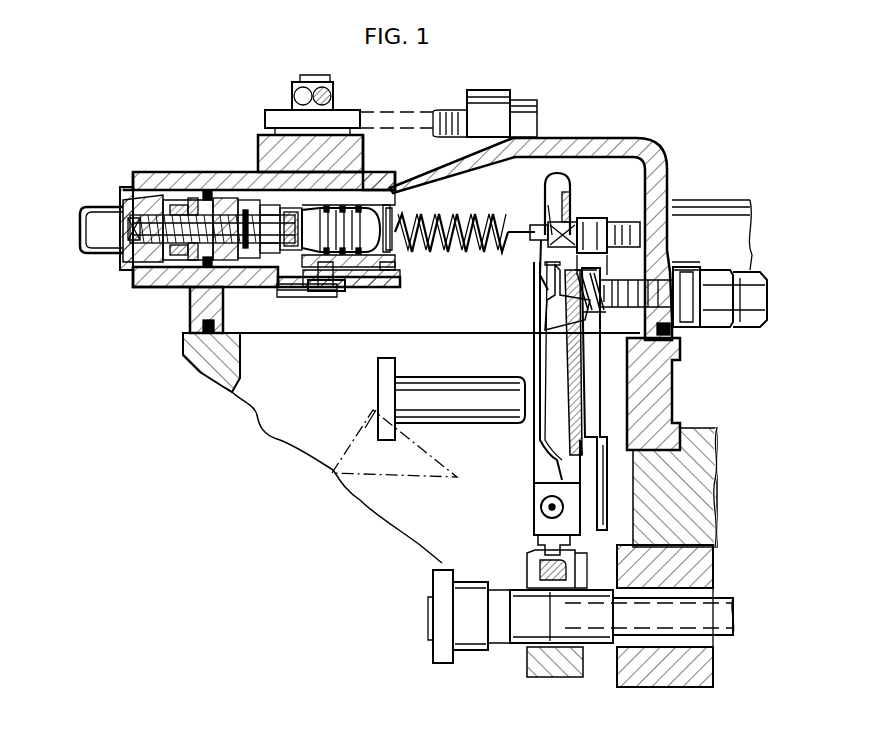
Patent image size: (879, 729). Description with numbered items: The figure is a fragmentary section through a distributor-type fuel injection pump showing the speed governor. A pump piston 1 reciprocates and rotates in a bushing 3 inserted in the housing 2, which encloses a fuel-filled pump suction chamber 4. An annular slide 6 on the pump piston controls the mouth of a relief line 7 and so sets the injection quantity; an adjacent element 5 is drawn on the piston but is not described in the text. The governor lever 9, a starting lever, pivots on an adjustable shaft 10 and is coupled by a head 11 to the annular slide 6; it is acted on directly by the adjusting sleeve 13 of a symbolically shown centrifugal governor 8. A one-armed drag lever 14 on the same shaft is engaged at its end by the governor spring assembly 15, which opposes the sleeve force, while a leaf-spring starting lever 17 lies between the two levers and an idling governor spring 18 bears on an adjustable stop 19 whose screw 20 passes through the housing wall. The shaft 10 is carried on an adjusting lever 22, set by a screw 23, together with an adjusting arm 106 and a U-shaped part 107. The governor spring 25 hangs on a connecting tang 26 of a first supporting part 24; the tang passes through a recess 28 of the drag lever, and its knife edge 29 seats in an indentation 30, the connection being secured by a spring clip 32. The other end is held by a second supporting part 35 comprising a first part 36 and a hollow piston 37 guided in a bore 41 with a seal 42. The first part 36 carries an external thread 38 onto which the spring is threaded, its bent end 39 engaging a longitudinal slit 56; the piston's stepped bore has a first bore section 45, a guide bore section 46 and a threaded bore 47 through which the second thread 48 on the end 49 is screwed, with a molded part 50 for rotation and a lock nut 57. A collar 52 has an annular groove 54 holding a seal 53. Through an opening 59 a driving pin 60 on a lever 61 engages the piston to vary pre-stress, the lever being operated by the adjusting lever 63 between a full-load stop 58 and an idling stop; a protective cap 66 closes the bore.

The pump piston 1 is at (475, 590).
The housing 2 is at (597, 152).
The bushing 3 is at (695, 568).
The pump suction chamber 4 is at (404, 461).
The shaft 5 is at (555, 595).
The annular slide 6 is at (540, 660).
The relief line 7 is at (540, 622).
The centrifugal governor 8 is at (390, 482).
The governor lever 9 is at (540, 448).
The shaft 10 is at (541, 505).
The head 11 is at (532, 555).
The adjusting sleeve 13 is at (451, 399).
The drag lever 14 is at (578, 380).
The governor spring assembly 15 is at (470, 285).
The starting lever 17 is at (552, 430).
The idling governor spring 18 is at (580, 315).
The adjustable stop 19 is at (655, 340).
The screw 20 is at (682, 322).
The adjusting lever 22 is at (584, 418).
The screw 23 is at (610, 250).
The first supporting part 24 is at (588, 220).
The governor spring 25 is at (475, 258).
The connecting tang 26 is at (535, 240).
The recess 28 is at (566, 220).
The knife edge 29 is at (545, 192).
The indentation 30 is at (545, 215).
The spring clip 32 is at (556, 172).
The second supporting part 35 is at (278, 290).
The first part 36 is at (387, 200).
The hollow piston 37 is at (228, 172).
The external thread 38 is at (384, 200).
The bent end 39 is at (320, 200).
The bore 41 is at (165, 200).
The seal 42 is at (213, 198).
The first bore section 45 is at (395, 262).
The guide bore section 46 is at (248, 200).
The threaded bore 47 is at (199, 200).
The second thread 48 is at (128, 270).
The end 49 is at (150, 198).
The molded part 50 is at (133, 178).
The collar 52 is at (296, 200).
The seal 53 is at (268, 200).
The annular groove 54 is at (265, 287).
The longitudinal slit 56 is at (353, 205).
The lock nut 57 is at (183, 200).
The full-load stop 58 is at (452, 110).
The opening 59 is at (360, 278).
The driving pin 60 is at (335, 277).
The lever 61 is at (296, 292).
The adjusting lever 63 is at (345, 118).
The protective cap 66 is at (105, 213).
The adjusting arm 106 is at (610, 225).
The U-shaped part 107 is at (600, 475).